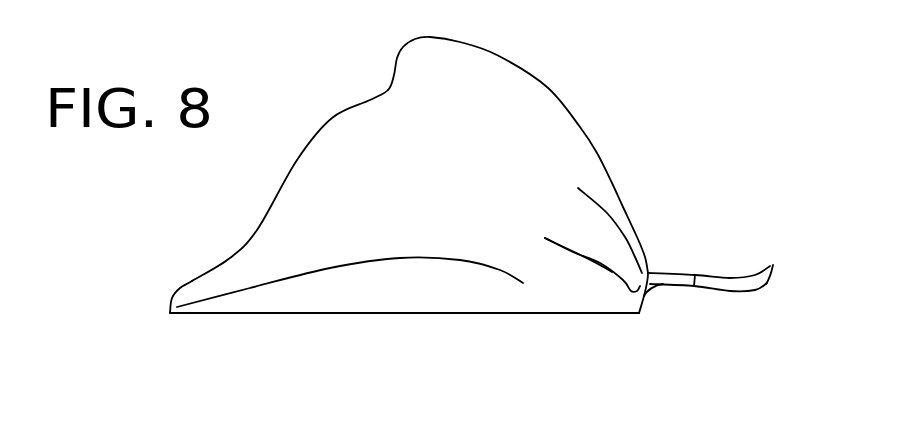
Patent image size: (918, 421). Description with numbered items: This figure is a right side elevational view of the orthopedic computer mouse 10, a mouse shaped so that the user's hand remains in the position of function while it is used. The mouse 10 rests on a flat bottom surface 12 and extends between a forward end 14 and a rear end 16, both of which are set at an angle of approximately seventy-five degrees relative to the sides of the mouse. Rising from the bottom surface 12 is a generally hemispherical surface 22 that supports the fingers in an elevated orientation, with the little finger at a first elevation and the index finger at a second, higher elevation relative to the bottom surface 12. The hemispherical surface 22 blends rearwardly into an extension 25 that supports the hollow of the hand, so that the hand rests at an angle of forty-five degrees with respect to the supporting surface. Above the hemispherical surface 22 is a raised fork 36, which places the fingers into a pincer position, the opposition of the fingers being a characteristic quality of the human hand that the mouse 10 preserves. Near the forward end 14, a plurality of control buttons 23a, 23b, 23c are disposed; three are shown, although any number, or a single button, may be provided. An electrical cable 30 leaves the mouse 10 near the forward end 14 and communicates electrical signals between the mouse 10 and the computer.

The orthopedic computer mouse 10 is at (599, 124).
The bottom surface 12 is at (455, 313).
The forward end 14 is at (640, 313).
The rear end 16 is at (170, 313).
The generally hemispherical surface 22 is at (338, 128).
The control button 23a is at (598, 283).
The control button 23b is at (622, 253).
The control button 23c is at (612, 193).
The extension 25 is at (187, 290).
The electrical cable 30 is at (746, 289).
The raised fork 36 is at (477, 69).